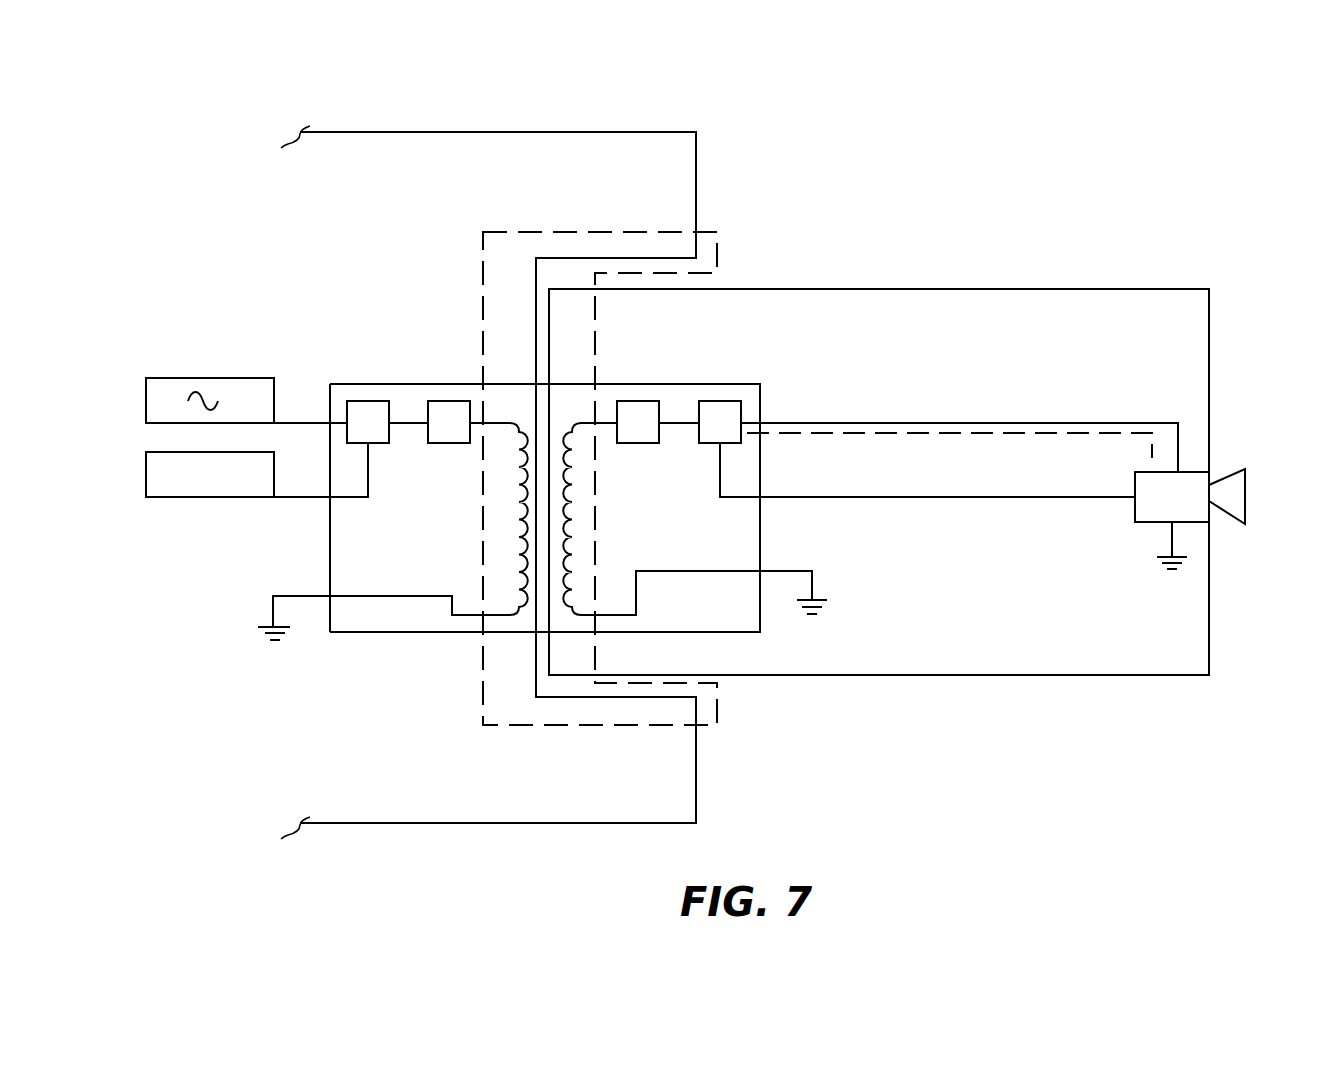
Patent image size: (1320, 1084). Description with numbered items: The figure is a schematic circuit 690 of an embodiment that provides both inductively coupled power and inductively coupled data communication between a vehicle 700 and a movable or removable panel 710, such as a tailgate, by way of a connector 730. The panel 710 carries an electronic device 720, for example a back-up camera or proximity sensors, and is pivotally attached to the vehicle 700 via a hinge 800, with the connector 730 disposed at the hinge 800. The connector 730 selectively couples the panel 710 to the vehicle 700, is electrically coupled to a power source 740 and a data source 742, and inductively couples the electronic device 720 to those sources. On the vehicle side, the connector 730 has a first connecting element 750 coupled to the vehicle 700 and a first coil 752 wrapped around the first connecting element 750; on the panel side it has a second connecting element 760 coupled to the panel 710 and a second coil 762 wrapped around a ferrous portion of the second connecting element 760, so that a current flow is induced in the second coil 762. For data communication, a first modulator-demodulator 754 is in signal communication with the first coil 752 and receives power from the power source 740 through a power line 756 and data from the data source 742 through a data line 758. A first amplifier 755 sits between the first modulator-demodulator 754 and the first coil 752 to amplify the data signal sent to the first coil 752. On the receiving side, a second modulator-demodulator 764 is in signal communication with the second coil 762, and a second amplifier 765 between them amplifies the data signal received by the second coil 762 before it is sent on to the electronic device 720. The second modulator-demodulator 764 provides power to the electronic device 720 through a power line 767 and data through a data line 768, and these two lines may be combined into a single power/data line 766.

The schematic circuit 690 is at (1132, 168).
The vehicle 700 is at (588, 131).
The movable or removable panel 710 is at (1107, 288).
The electronic device 720 is at (1195, 512).
The connector 730 is at (726, 276).
The power source 740 is at (171, 378).
The data source 742 is at (177, 488).
The first connecting element 750 is at (697, 157).
The first coil 752 is at (525, 533).
The first modulator-demodulator 754 is at (375, 410).
The first amplifier 755 is at (450, 410).
The power line 756 is at (293, 420).
The data line 758 is at (297, 498).
The second connecting element 760 is at (966, 663).
The second coil 762 is at (567, 535).
The second modulator-demodulator 764 is at (722, 410).
The second amplifier 765 is at (645, 410).
The single power/data line 766 is at (1020, 432).
The power line 767 is at (1113, 421).
The data line 768 is at (1048, 498).
The hinge 800 is at (718, 708).